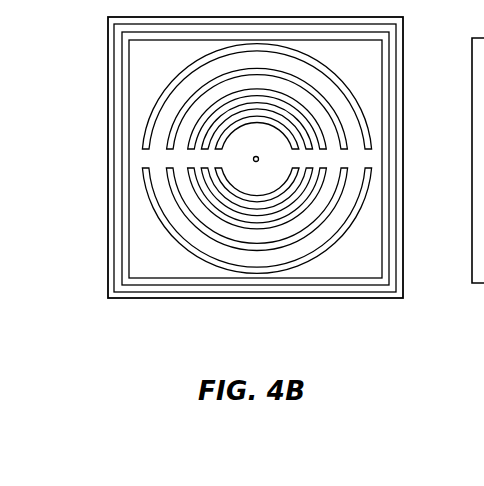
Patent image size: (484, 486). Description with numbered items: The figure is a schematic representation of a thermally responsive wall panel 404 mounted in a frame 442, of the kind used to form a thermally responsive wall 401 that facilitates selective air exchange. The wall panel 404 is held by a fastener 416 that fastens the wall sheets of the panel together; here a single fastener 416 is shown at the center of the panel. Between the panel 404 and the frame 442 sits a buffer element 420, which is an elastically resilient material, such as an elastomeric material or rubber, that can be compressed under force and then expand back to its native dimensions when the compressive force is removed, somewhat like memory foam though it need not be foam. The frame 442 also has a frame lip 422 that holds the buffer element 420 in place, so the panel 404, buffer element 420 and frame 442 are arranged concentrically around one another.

The thermally responsive wall 401 is at (135, 240).
The thermally responsive wall panel 404 is at (143, 62).
The fastener 416 is at (259, 159).
The buffer element 420 is at (177, 283).
The frame lip 422 is at (128, 290).
The frame 442 is at (109, 153).